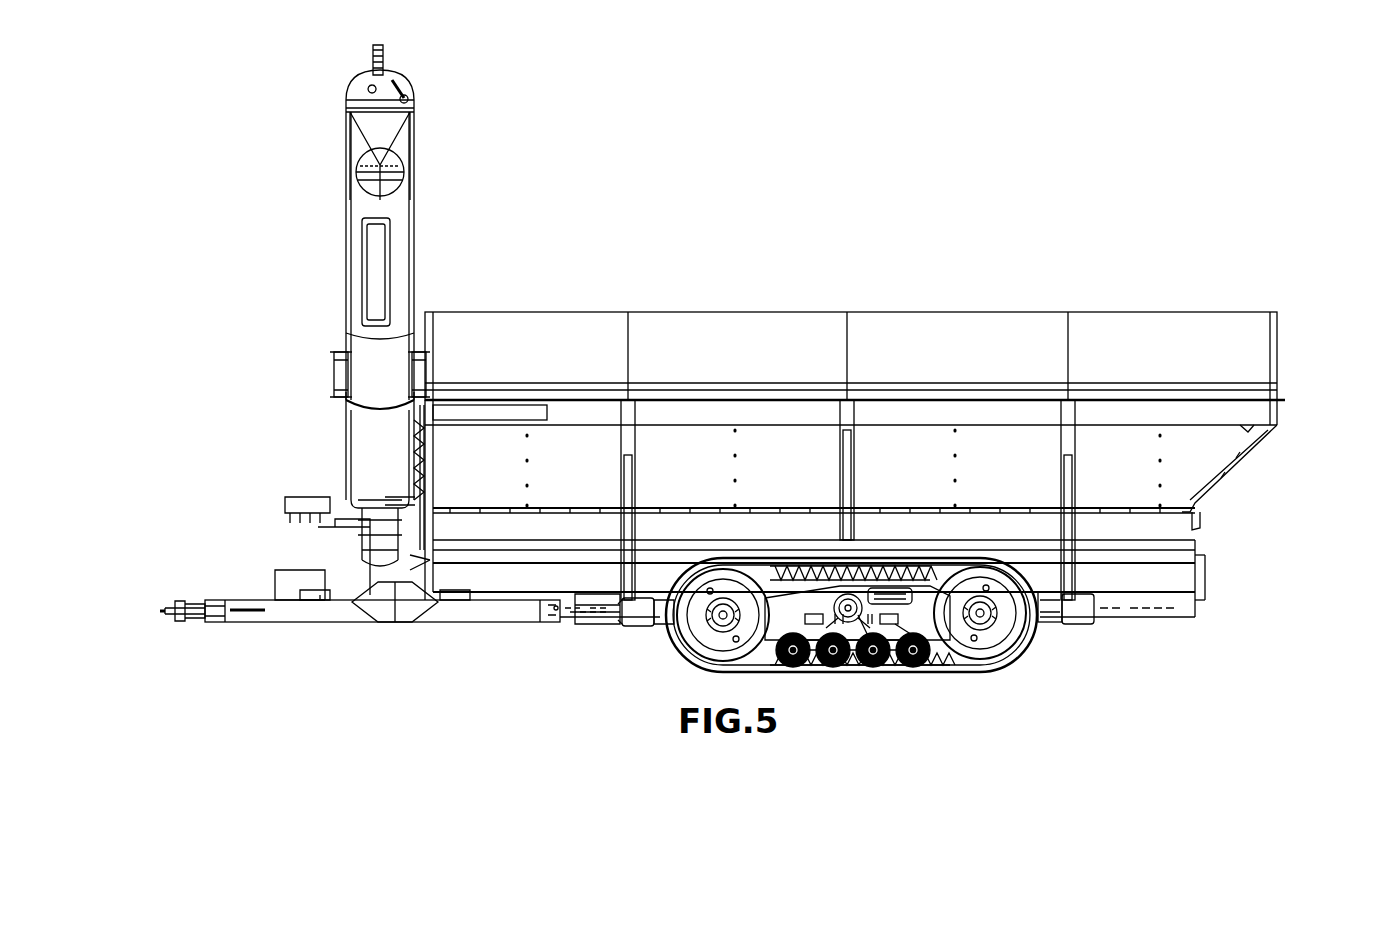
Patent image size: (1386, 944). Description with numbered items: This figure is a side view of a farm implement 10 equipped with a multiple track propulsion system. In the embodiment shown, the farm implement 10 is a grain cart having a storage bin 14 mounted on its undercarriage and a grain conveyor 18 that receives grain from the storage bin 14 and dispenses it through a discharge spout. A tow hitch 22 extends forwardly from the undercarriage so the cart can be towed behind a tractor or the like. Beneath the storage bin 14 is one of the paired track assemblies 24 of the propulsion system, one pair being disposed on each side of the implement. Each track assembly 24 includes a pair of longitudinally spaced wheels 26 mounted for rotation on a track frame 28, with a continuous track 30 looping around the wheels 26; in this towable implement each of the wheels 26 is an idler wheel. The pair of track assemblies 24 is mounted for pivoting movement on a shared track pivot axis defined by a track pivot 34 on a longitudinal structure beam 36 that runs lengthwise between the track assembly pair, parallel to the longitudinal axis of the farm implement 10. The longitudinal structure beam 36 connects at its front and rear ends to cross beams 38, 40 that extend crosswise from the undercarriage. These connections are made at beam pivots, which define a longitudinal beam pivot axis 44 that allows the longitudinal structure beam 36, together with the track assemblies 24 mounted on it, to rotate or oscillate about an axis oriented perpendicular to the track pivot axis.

The farm implement 10 is at (1198, 160).
The storage bin 14 is at (1284, 372).
The grain conveyor 18 is at (342, 262).
The tow hitch 22 is at (174, 594).
The track assembly 24 is at (847, 676).
The wheels 26 is at (685, 642).
The track frame 28 is at (945, 668).
The continuous track 30 is at (905, 668).
The track pivot 34 is at (870, 668).
The longitudinal structure beam 36 is at (655, 620).
The cross beam 38 is at (622, 618).
The cross beam 40 is at (1078, 620).
The longitudinal beam pivot axis 44 is at (572, 612).